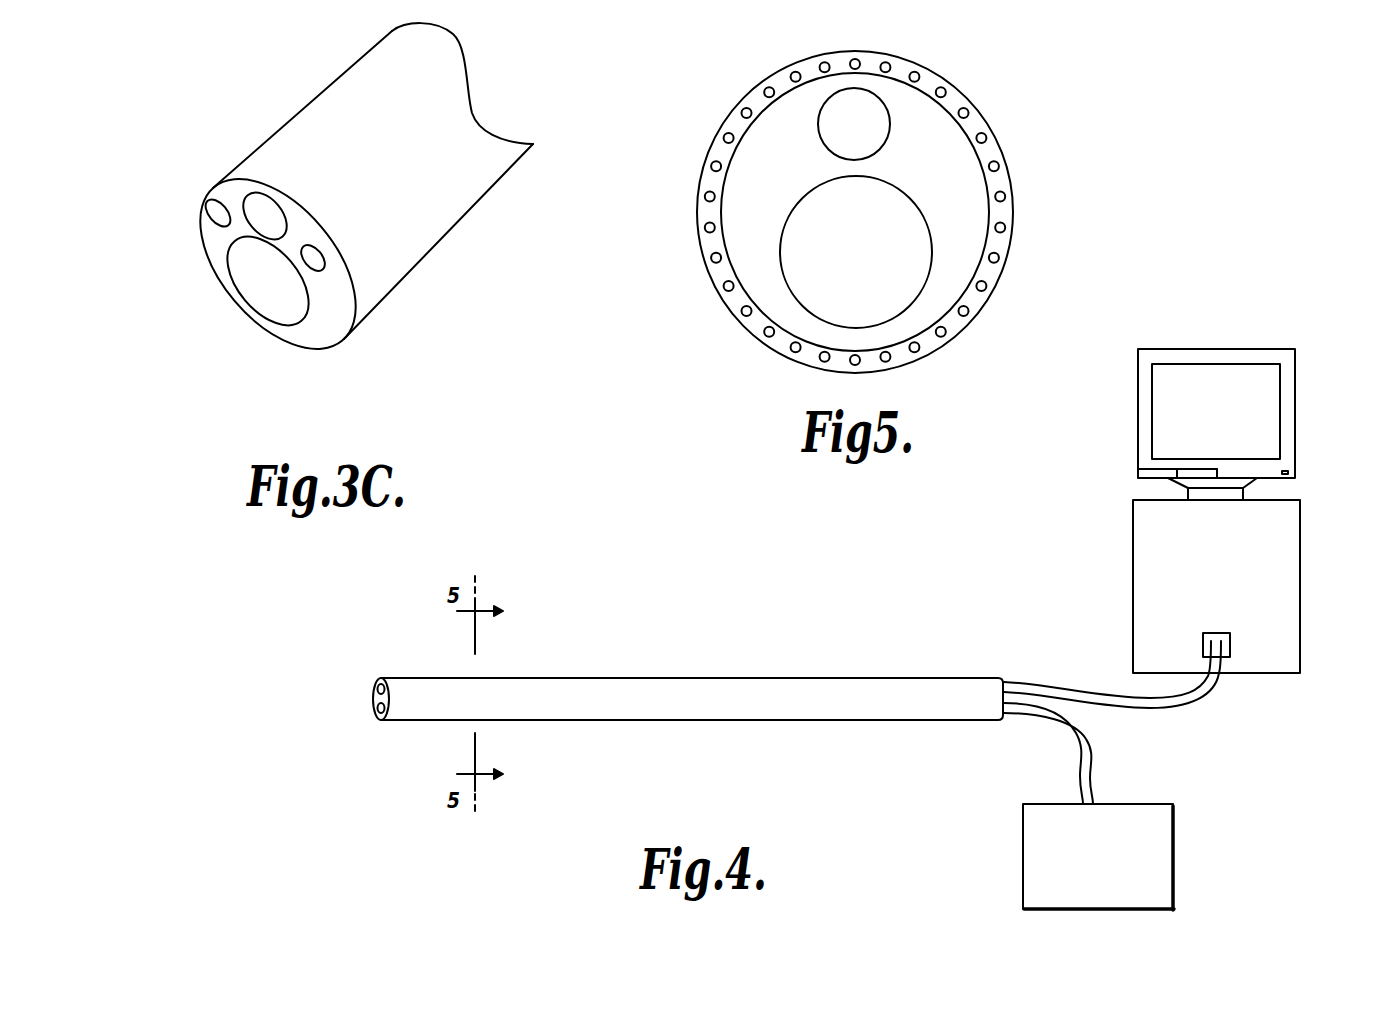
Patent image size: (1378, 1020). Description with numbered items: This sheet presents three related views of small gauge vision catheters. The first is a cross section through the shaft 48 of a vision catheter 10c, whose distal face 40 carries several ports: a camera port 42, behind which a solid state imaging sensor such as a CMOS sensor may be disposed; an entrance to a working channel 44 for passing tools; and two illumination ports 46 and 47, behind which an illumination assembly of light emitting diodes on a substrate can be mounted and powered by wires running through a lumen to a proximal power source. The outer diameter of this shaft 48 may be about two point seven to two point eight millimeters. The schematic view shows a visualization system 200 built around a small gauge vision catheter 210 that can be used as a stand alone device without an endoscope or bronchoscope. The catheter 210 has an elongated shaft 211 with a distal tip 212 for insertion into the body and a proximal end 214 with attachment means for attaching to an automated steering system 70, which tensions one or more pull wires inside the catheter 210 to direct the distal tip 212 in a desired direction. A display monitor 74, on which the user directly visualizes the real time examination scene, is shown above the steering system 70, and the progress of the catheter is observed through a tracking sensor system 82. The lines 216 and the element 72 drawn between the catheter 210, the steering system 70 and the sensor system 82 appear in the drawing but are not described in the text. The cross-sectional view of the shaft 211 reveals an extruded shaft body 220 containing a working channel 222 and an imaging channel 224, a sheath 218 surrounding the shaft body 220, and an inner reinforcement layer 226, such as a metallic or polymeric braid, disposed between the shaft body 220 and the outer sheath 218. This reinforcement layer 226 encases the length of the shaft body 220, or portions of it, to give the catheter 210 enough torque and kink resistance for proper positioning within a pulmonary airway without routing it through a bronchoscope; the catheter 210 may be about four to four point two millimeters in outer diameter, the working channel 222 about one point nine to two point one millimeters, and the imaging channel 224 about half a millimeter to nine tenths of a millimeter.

In FIG. 3C, the vision catheter 10c is at (340, 212).
In FIG. 3C, the distal face 40 is at (302, 335).
In FIG. 3C, the camera port 42 is at (265, 214).
In FIG. 3C, the working channel 44 is at (247, 273).
In FIG. 3C, the illumination port 46 is at (218, 213).
In FIG. 3C, the illumination port 47 is at (312, 258).
In FIG. 3C, the shaft 48 is at (333, 347).
In FIG. 4, the visualization system 200 is at (865, 629).
In FIG. 5, the small gauge vision catheter 210 is at (856, 201).
In FIG. 4, the small gauge vision catheter 210 is at (688, 656).
In FIG. 5, the elongated shaft 211 is at (1005, 163).
In FIG. 4, the elongated shaft 211 is at (692, 685).
In FIG. 4, the distal tip 212 is at (393, 677).
In FIG. 4, the proximal end 214 is at (943, 675).
In FIG. 4, the cable 216 is at (1057, 690).
In FIG. 5, the sheath 218 is at (935, 79).
In FIG. 5, the extruded shaft body 220 is at (749, 248).
In FIG. 5, the working channel 222 is at (888, 211).
In FIG. 5, the imaging channel 224 is at (845, 125).
In FIG. 5, the inner reinforcement layer 226 is at (712, 187).
In FIG. 4, the automated steering system 70 is at (1245, 617).
In FIG. 4, the connector port 72 is at (1232, 642).
In FIG. 4, the display monitor 74 is at (1290, 412).
In FIG. 4, the tracking sensor system 82 is at (1023, 852).